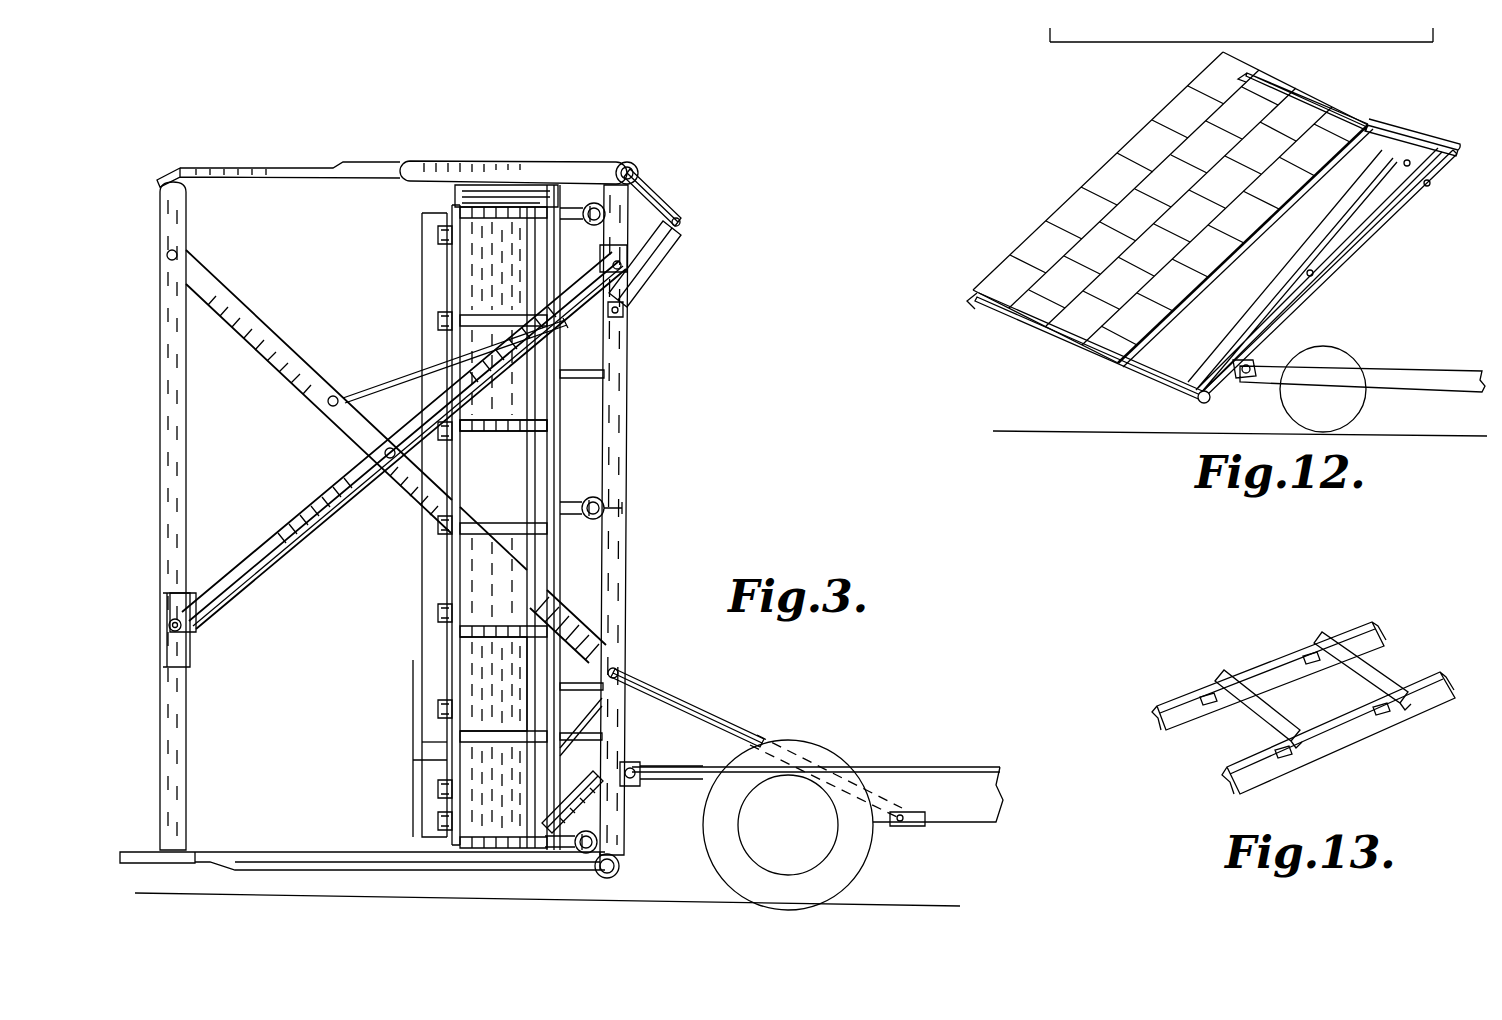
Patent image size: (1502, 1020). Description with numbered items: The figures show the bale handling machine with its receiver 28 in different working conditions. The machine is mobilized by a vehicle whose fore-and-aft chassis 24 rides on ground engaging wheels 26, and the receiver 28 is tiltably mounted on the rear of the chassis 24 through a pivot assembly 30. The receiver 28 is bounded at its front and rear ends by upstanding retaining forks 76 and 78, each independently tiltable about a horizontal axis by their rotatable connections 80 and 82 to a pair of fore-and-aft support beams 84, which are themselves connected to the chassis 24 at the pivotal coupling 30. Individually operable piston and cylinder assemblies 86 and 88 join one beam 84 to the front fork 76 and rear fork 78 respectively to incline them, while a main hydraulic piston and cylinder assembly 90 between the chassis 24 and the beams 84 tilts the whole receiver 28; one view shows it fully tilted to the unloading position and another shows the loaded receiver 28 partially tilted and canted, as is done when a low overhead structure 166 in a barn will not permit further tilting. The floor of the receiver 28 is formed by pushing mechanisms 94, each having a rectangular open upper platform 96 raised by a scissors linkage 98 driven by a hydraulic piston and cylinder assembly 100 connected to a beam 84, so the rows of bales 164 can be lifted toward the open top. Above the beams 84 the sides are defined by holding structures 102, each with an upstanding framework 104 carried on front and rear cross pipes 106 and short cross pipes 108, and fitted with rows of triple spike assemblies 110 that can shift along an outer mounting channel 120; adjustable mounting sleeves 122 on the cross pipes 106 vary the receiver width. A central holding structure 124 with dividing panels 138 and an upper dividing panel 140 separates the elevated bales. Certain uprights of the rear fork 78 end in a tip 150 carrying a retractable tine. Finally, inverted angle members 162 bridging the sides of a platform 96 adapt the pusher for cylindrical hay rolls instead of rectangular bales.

In FIG. 3, the chassis 24 is at (975, 790).
In FIG. 12, the chassis 24 is at (1440, 372).
In FIG. 3, the ground engaging wheels 26 is at (855, 848).
In FIG. 12, the ground engaging wheels 26 is at (1363, 412).
In FIG. 3, the receiver 28 is at (215, 165).
In FIG. 12, the receiver 28 is at (1298, 78).
In FIG. 3, the pivot assembly 30 is at (637, 768).
In FIG. 3, the front retaining fork 76 is at (390, 160).
In FIG. 12, the front retaining fork 76 is at (1360, 107).
In FIG. 3, the rear retaining fork 78 is at (330, 852).
In FIG. 12, the rear retaining fork 78 is at (1090, 362).
In FIG. 3, the rotatable connection 80 is at (636, 164).
In FIG. 3, the rotatable connection 82 is at (620, 870).
In FIG. 3, the support beams 84 is at (623, 403).
In FIG. 12, the support beams 84 is at (1447, 172).
In FIG. 3, the piston and cylinder assembly 86 is at (662, 243).
In FIG. 3, the piston and cylinder assembly 88 is at (570, 800).
In FIG. 3, the main hydraulic piston and cylinder assembly 90 is at (810, 758).
In FIG. 3, the pushing mechanism 94 is at (159, 492).
In FIG. 12, the pushing mechanism 94 is at (1335, 253).
In FIG. 13, the open upper platform 96 is at (1278, 667).
In FIG. 3, the scissors linkage 98 is at (350, 500).
In FIG. 3, the hydraulic piston and cylinder assembly 100 is at (483, 345).
In FIG. 3, the holding structure 102 is at (450, 297).
In FIG. 3, the upstanding framework 104 is at (495, 430).
In FIG. 3, the front and rear cross pipes 106 is at (590, 225).
In FIG. 3, the short cross pipes 108 is at (600, 497).
In FIG. 3, the triple spike assembly 110 is at (438, 620).
In FIG. 3, the outer mounting channel 120 is at (453, 665).
In FIG. 3, the mounting sleeves 122 is at (582, 520).
In FIG. 3, the central holding structure 124 is at (438, 692).
In FIG. 3, the dividing panels 138 is at (425, 777).
In FIG. 3, the dividing panel 140 is at (420, 752).
In FIG. 12, the tip 150 is at (995, 305).
In FIG. 13, the angle members 162 is at (1372, 672).
In FIG. 12, the bales 164 is at (1035, 237).
In FIG. 12, the low overhead structure 166 is at (1095, 44).